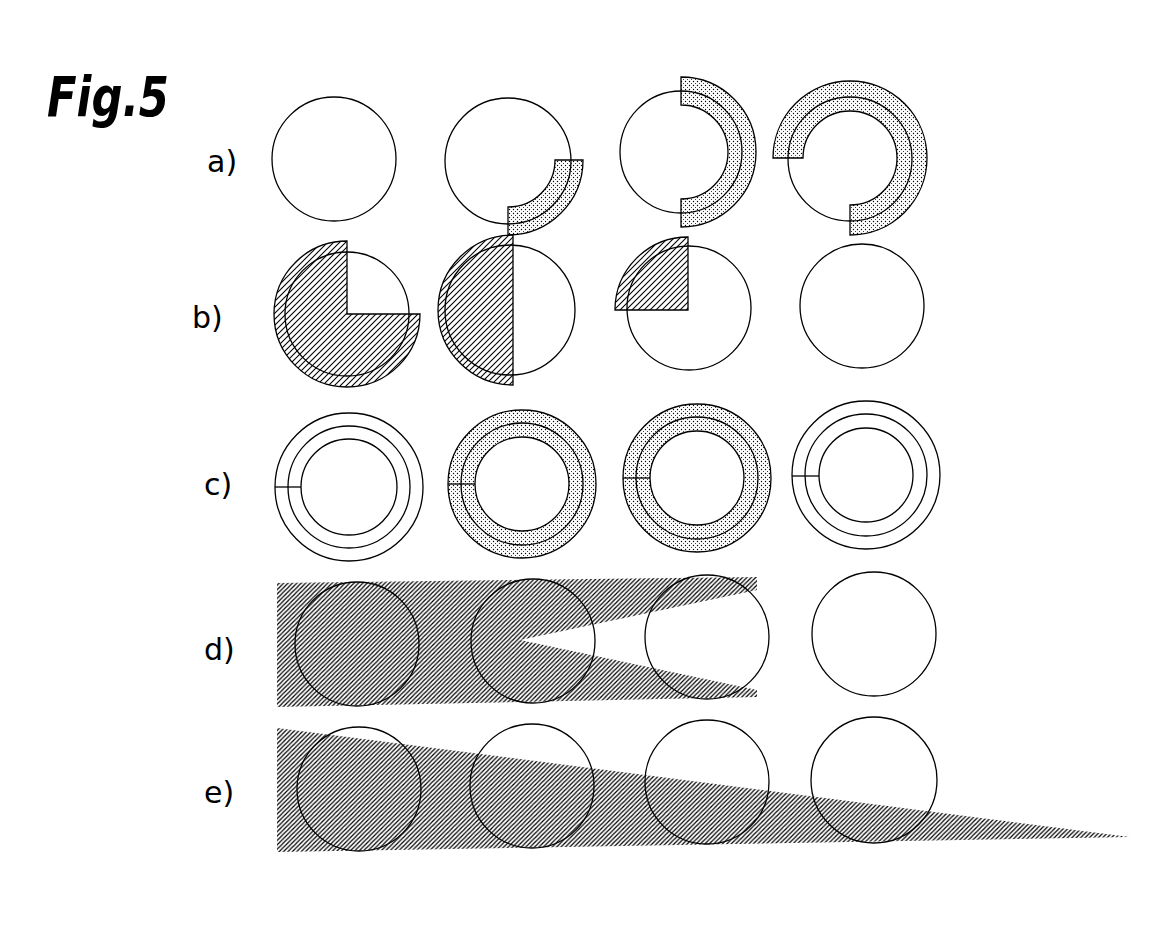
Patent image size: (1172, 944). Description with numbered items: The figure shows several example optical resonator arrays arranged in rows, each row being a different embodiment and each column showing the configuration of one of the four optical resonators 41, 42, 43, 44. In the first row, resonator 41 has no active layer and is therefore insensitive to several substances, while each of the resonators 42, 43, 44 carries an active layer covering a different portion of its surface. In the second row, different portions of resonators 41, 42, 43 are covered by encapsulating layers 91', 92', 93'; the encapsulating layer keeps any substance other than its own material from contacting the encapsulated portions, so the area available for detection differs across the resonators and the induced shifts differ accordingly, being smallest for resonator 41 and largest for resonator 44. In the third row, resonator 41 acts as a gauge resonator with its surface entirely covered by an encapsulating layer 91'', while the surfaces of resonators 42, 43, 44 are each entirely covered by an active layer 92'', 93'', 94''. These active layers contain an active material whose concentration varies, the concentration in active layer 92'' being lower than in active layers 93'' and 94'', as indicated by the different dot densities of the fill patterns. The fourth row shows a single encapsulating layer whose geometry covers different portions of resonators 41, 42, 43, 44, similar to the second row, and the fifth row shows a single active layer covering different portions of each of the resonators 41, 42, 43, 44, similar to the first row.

In FIG. 5a, the optical resonator 41 is at (334, 125).
In FIG. 5a, the optical resonator 42 is at (514, 137).
In FIG. 5a, the optical resonator 43 is at (688, 130).
In FIG. 5a, the optical resonator 44 is at (850, 127).
In FIG. 5b, the encapsulating layer 91' is at (325, 312).
In FIG. 5b, the encapsulating layer 92' is at (495, 308).
In FIG. 5b, the encapsulating layer 93' is at (662, 299).
In FIG. 5c, the encapsulating layer 91'' is at (333, 486).
In FIG. 5c, the active layer 92'' is at (513, 491).
In FIG. 5c, the active layer 93'' is at (688, 471).
In FIG. 5c, the active layer 94'' is at (853, 469).